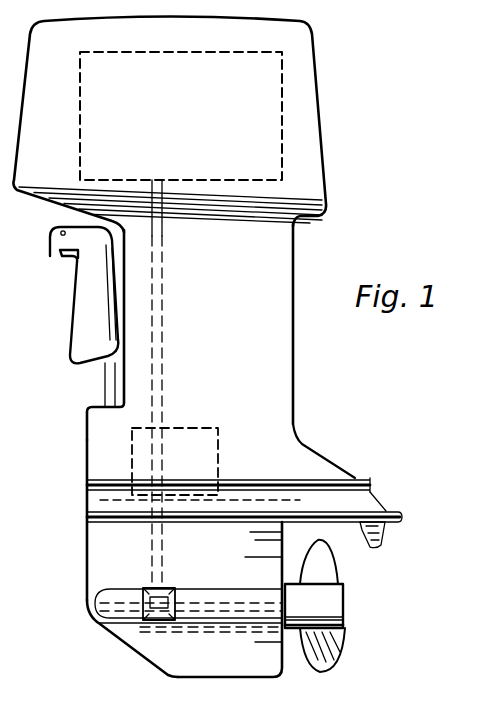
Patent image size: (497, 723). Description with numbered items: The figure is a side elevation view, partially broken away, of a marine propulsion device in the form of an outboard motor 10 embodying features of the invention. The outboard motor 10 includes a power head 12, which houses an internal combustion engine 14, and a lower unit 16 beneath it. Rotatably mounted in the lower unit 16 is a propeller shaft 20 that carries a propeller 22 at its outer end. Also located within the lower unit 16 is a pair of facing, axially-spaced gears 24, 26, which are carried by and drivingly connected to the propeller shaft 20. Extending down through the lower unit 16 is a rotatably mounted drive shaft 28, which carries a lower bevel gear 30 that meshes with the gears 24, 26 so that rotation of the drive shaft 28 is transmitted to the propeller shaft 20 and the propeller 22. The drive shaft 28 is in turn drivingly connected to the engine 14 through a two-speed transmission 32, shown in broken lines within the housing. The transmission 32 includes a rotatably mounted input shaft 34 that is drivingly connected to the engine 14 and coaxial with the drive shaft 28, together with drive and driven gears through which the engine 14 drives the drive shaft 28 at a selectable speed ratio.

The outboard motor 10 is at (352, 250).
The power head 12 is at (320, 55).
The internal combustion engine 14 is at (248, 112).
The lower unit 16 is at (333, 415).
The propeller shaft 20 is at (225, 608).
The propeller 22 is at (310, 570).
The gear 24 is at (150, 620).
The gear 26 is at (150, 626).
The drive shaft 28 is at (155, 527).
The lower bevel gear 30 is at (150, 583).
The two-speed transmission 32 is at (147, 443).
The input shaft 34 is at (155, 363).